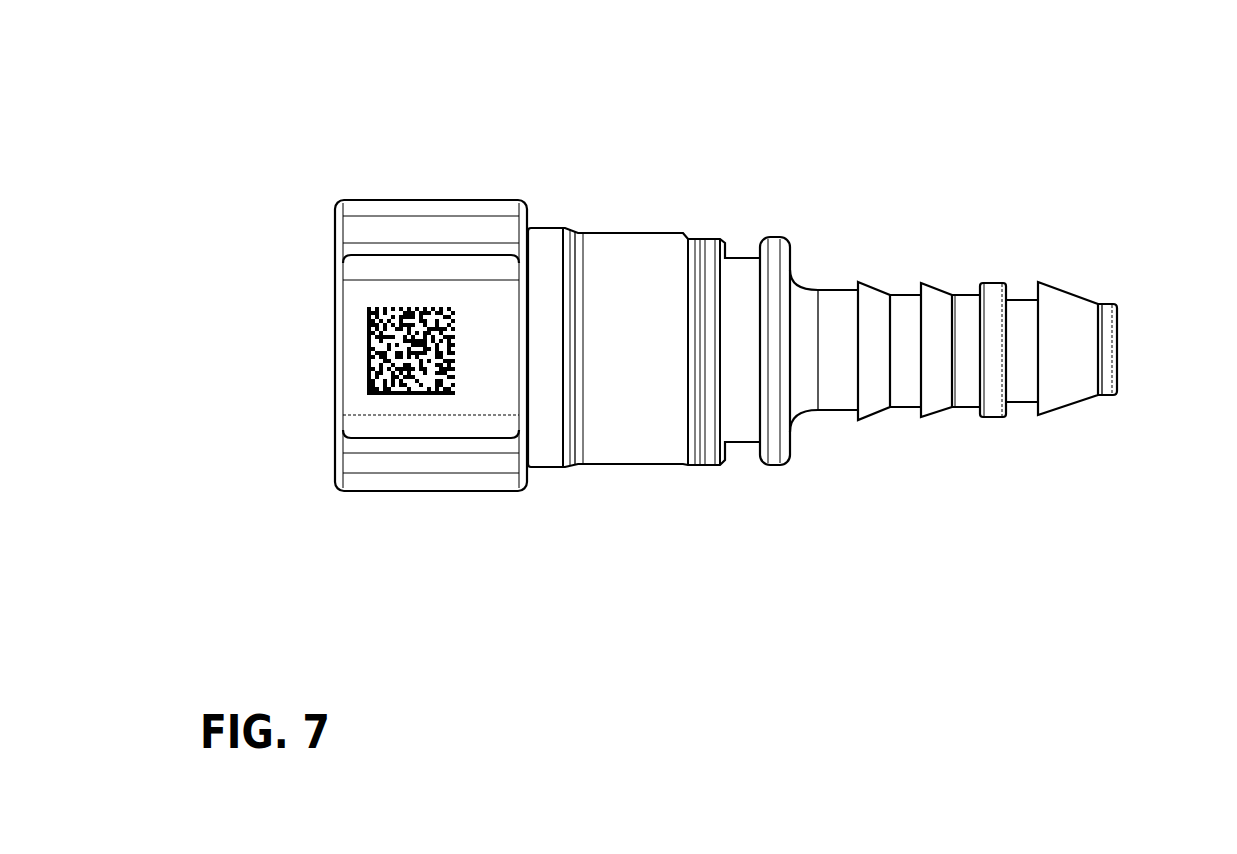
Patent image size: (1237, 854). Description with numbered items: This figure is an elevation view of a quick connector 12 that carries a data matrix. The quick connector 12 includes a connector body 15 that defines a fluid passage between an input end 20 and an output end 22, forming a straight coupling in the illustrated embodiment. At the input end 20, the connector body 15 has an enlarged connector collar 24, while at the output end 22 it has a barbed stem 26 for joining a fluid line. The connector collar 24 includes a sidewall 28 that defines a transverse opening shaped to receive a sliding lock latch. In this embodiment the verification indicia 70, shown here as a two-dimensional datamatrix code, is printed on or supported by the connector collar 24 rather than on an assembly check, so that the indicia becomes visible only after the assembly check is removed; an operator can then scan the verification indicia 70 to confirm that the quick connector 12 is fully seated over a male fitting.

The quick connector 12 is at (782, 158).
The connector body 15 is at (635, 233).
The input end 20 is at (338, 465).
The output end 22 is at (1118, 322).
The connector collar 24 is at (377, 202).
The barbed stem 26 is at (935, 292).
The sidewall 28 is at (483, 392).
The verification indicia 70 is at (413, 310).